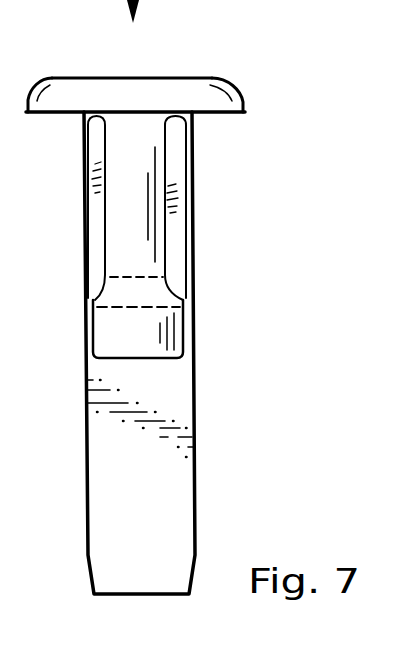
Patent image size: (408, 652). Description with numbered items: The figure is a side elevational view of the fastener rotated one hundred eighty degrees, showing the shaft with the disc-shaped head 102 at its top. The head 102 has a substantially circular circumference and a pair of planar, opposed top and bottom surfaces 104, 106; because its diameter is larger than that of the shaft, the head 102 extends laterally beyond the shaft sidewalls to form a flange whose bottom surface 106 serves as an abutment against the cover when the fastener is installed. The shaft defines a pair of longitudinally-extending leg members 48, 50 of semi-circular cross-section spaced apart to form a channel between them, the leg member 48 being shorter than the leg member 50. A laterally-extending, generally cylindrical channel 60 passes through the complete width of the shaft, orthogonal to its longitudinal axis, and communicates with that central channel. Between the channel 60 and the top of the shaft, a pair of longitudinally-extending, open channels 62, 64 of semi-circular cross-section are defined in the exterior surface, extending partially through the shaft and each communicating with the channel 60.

The leg member 48 is at (138, 216).
The leg member 50 is at (196, 455).
The cylindrical channel 60 is at (181, 293).
The open channel 62 is at (95, 200).
The open channel 64 is at (177, 237).
The head 102 is at (213, 80).
The top surface 104 is at (112, 78).
The bottom surface 106 is at (218, 114).